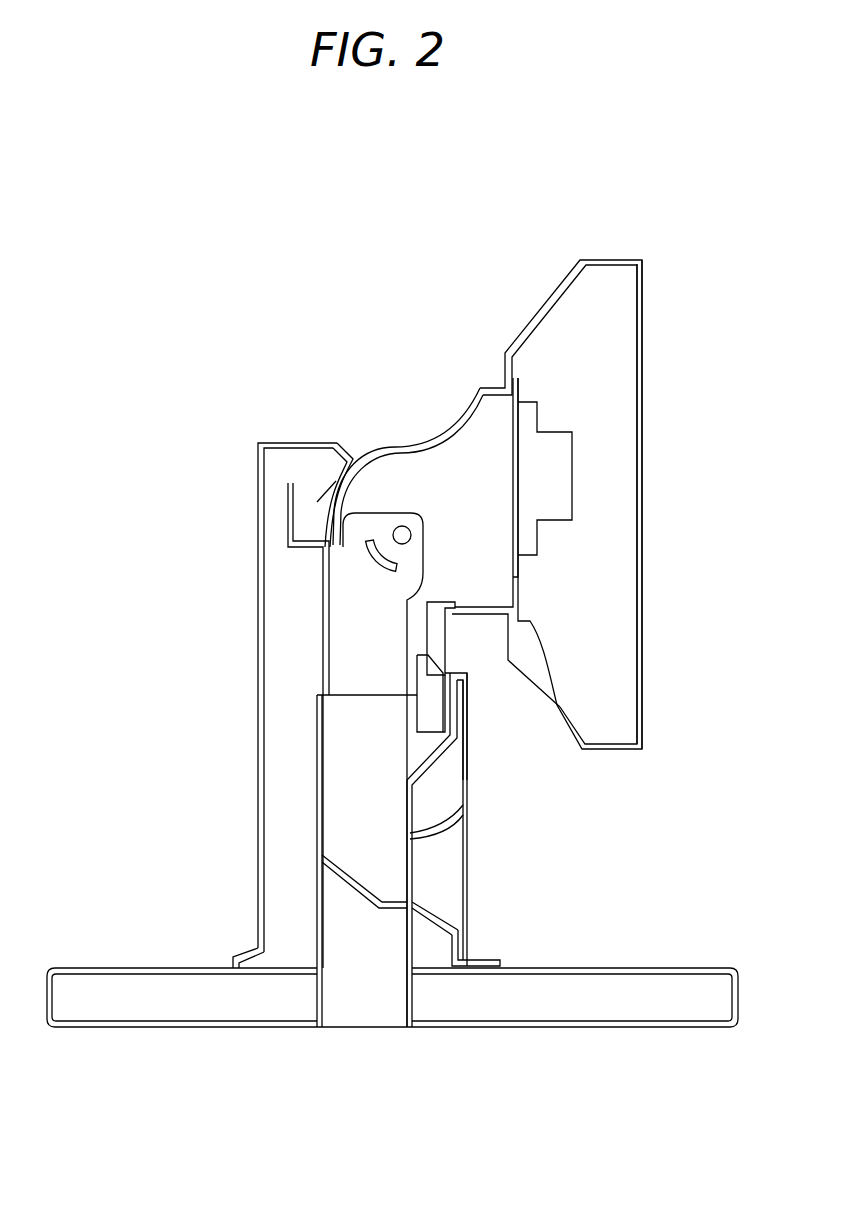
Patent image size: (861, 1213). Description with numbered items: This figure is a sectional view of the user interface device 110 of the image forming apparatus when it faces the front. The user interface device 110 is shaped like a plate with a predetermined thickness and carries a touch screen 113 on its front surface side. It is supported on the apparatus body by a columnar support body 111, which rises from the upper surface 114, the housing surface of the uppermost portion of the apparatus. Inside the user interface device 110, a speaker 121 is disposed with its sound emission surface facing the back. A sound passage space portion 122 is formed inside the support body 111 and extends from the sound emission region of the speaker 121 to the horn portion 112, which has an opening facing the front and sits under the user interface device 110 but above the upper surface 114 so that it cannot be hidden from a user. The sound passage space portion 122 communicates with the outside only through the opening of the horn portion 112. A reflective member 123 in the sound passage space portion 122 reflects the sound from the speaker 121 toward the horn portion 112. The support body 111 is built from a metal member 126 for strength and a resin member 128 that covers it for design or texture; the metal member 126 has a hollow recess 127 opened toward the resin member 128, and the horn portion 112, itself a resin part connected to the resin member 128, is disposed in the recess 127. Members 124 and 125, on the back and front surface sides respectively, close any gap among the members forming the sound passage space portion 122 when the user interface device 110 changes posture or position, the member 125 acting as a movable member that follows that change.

The user interface device 110 is at (645, 262).
The support body 111 is at (315, 803).
The horn portion 112 is at (450, 870).
The touch screen 113 is at (642, 437).
The upper surface 114 is at (640, 968).
The speaker 121 is at (560, 493).
The sound passage space portion 122 is at (340, 757).
The reflective member 123 is at (350, 882).
The member 124 is at (338, 476).
The member 125 is at (435, 638).
The metal member 126 is at (433, 768).
The recess 127 is at (410, 895).
The resin member 128 is at (463, 758).